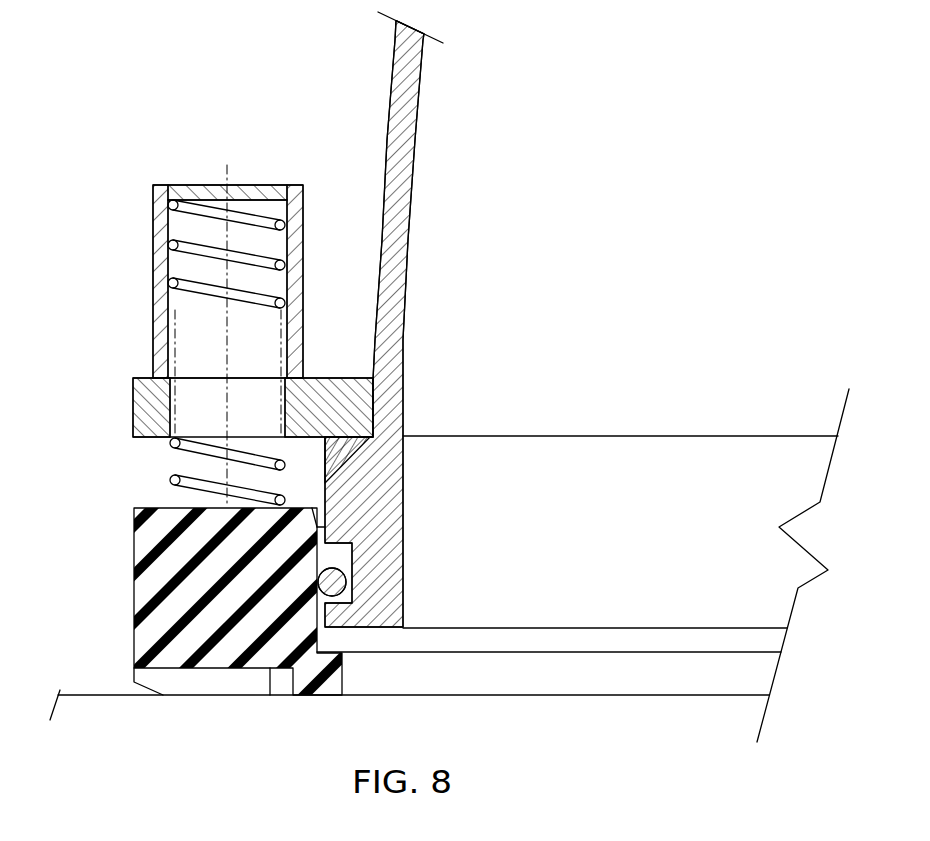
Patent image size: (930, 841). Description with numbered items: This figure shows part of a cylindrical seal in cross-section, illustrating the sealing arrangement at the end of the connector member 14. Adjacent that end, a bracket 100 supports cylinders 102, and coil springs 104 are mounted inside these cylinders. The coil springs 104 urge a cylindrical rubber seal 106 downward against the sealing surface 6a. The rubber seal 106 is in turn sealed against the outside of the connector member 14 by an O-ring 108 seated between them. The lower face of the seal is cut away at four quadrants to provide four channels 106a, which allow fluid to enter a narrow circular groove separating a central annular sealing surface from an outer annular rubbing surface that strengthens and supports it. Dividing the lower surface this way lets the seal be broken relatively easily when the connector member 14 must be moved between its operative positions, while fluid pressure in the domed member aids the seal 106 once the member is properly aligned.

The connector member 14 is at (397, 110).
The cylinders 102 is at (158, 258).
The coil springs 104 is at (200, 292).
The bracket 100 is at (138, 408).
The cylindrical rubber seal 106 is at (134, 572).
The channels 106a is at (216, 676).
The O-ring 108 is at (345, 582).
The sealing surface 6a is at (108, 690).